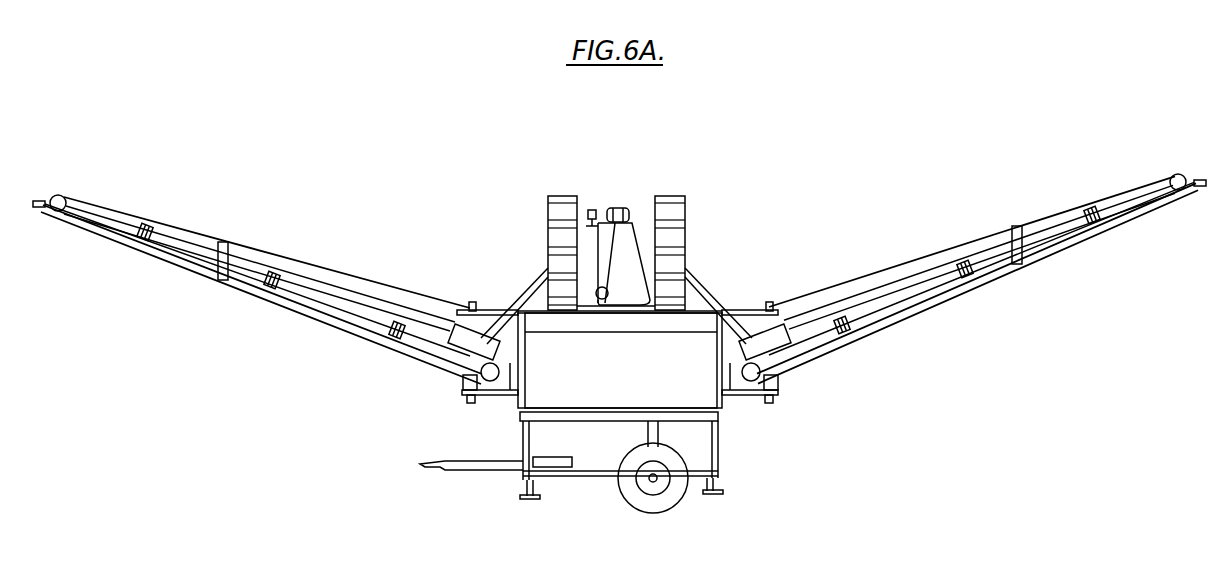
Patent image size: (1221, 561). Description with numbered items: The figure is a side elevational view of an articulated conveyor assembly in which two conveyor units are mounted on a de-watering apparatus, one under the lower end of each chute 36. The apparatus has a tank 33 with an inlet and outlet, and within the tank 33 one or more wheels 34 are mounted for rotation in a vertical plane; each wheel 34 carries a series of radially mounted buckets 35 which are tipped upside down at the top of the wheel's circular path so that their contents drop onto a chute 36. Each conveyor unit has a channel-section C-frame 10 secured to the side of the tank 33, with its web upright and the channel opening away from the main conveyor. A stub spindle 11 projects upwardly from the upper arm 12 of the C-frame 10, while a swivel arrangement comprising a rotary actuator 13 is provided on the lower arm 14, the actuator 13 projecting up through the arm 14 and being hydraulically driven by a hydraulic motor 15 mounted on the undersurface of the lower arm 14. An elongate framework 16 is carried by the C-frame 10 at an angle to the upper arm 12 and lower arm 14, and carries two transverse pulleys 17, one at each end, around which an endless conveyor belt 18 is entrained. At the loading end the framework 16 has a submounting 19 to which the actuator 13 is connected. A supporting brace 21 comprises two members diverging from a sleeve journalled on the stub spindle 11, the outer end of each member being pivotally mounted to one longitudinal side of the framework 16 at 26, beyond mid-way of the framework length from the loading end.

The C-frame 10 is at (501, 407).
The stub spindle 11 is at (470, 304).
The upper arm 12 is at (489, 314).
The rotary actuator 13 is at (463, 392).
The lower arm 14 is at (465, 395).
The hydraulic motor 15 is at (471, 405).
The elongate framework 16 is at (268, 299).
The pulley 17 is at (69, 190).
The endless conveyor belt 18 is at (96, 205).
The submounting 19 is at (463, 380).
The supporting brace 21 is at (300, 268).
The pivotal mounting 26 is at (220, 280).
The tank 33 is at (620, 359).
The wheel 34 is at (546, 221).
The bucket 35 is at (653, 230).
The chute 36 is at (536, 288).